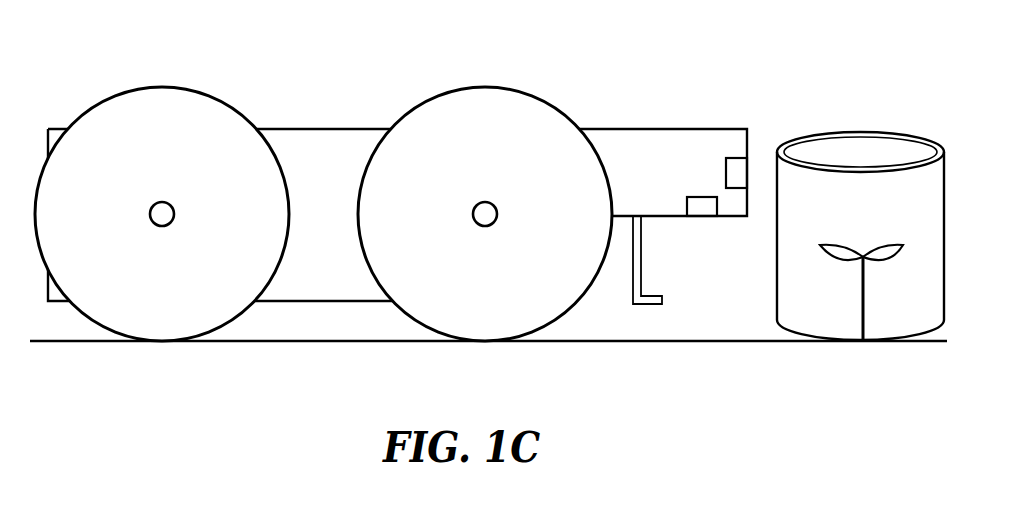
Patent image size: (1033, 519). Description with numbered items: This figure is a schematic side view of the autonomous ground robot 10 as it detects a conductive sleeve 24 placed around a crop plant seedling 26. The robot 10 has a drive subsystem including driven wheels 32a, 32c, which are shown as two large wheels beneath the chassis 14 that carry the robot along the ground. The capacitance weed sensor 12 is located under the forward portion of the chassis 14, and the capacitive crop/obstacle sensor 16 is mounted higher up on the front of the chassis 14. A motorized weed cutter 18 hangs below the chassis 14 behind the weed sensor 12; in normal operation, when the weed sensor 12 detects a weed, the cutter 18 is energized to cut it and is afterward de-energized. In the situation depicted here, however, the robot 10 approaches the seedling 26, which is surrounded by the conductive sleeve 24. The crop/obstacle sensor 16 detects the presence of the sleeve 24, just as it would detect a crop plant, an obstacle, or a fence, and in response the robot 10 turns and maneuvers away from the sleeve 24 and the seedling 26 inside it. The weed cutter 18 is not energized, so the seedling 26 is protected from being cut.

The autonomous ground robot 10 is at (417, 224).
The capacitance weed sensor 12 is at (699, 209).
The chassis 14 is at (337, 176).
The capacitive crop/obstacle sensor 16 is at (740, 170).
The motorized weed cutter 18 is at (643, 306).
The conductive sleeve 24 is at (822, 310).
The crop plant seedling 26 is at (871, 244).
The driven wheel 32a is at (514, 312).
The driven wheel 32c is at (181, 314).